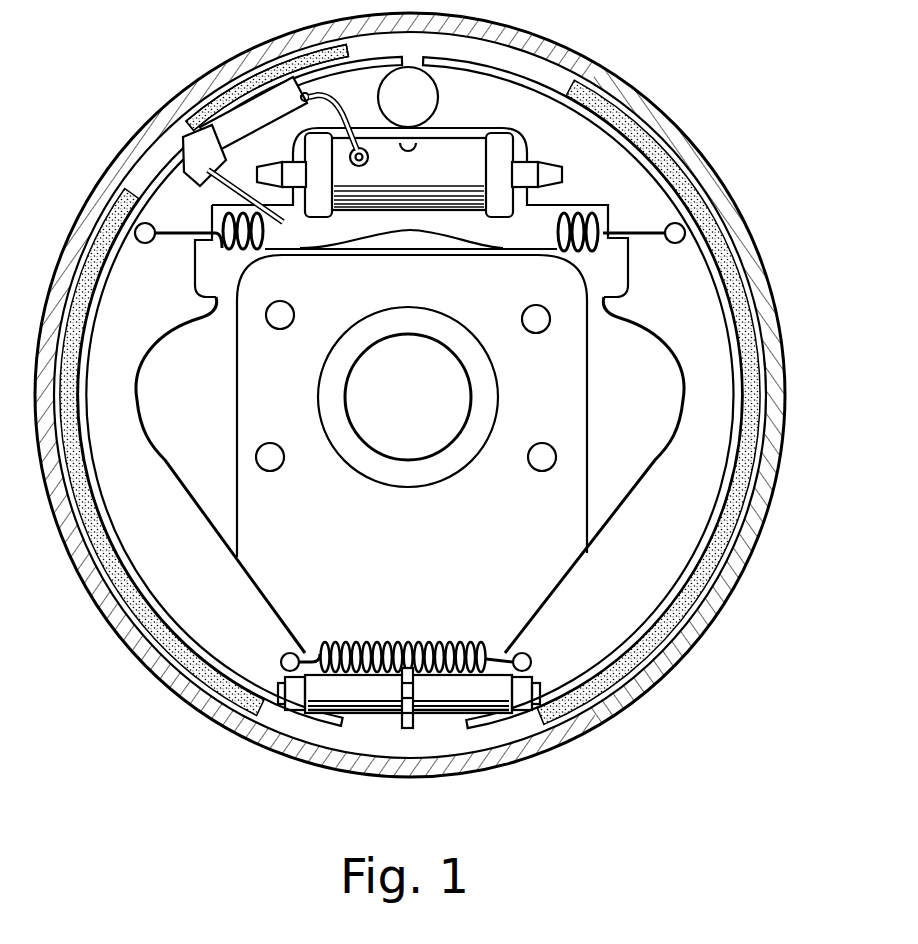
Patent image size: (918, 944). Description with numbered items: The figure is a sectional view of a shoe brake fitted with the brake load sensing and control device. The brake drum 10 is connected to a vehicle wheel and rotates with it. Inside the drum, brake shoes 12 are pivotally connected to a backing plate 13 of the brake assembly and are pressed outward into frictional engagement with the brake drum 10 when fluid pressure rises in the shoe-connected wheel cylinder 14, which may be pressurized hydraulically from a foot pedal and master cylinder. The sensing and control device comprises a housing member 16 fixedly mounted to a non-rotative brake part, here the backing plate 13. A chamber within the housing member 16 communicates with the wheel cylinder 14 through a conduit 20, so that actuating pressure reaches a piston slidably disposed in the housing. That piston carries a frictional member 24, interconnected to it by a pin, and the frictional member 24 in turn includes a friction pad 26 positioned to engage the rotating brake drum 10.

The brake drum 10 is at (65, 527).
The brake shoes 12 is at (127, 432).
The backing plate 13 is at (590, 358).
The wheel cylinder 14 is at (457, 148).
The housing member 16 is at (266, 134).
The conduit 20 is at (330, 100).
The frictional member 24 is at (342, 64).
The friction pad 26 is at (289, 62).